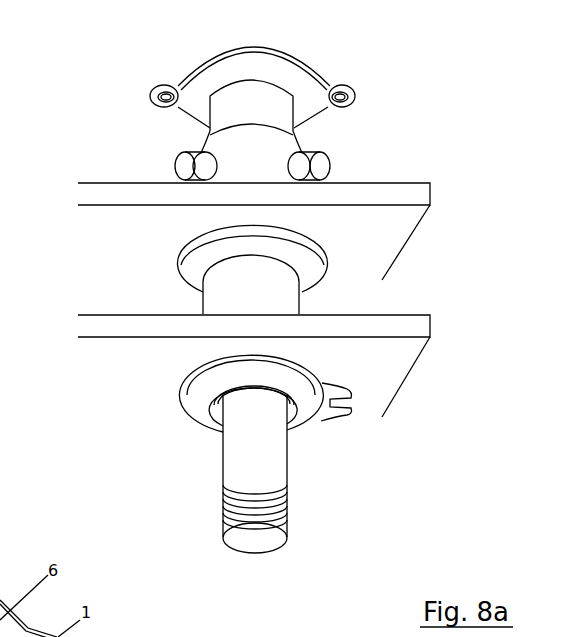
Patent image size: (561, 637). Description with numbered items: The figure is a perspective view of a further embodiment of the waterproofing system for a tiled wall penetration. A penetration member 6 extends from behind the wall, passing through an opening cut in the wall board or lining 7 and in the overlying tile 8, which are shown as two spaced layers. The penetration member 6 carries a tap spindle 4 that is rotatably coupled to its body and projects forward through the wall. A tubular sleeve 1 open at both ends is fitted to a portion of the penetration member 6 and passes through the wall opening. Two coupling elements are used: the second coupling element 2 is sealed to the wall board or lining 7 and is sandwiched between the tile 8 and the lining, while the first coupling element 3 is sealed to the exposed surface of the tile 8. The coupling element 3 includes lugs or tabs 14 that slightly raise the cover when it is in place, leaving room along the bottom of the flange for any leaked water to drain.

The sleeve 1 is at (297, 147).
The second coupling element 2 is at (177, 275).
The first coupling element 3 is at (182, 413).
The tap spindle 4 is at (282, 473).
The penetration member 6 is at (258, 103).
The wall board or lining 7 is at (160, 197).
The tile 8 is at (162, 327).
The lugs or tabs 14 is at (325, 420).